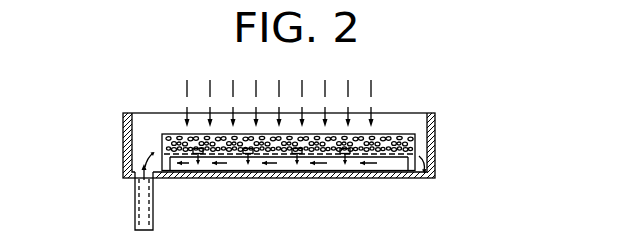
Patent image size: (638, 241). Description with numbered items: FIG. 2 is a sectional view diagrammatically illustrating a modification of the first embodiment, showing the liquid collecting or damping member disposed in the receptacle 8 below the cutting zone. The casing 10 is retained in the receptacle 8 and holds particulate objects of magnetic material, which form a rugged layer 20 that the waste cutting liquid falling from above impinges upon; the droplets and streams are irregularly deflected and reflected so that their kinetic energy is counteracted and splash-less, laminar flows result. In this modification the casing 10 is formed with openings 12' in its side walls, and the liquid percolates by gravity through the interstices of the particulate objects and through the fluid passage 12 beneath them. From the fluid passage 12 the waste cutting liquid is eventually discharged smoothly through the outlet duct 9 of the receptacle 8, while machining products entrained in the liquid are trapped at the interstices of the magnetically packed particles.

The receptacle 8 is at (437, 132).
The outlet duct 9 is at (135, 184).
The casing 10 is at (415, 150).
The fluid passage 12 is at (290, 189).
The openings 12' is at (217, 175).
The rugged layer 20 is at (178, 133).